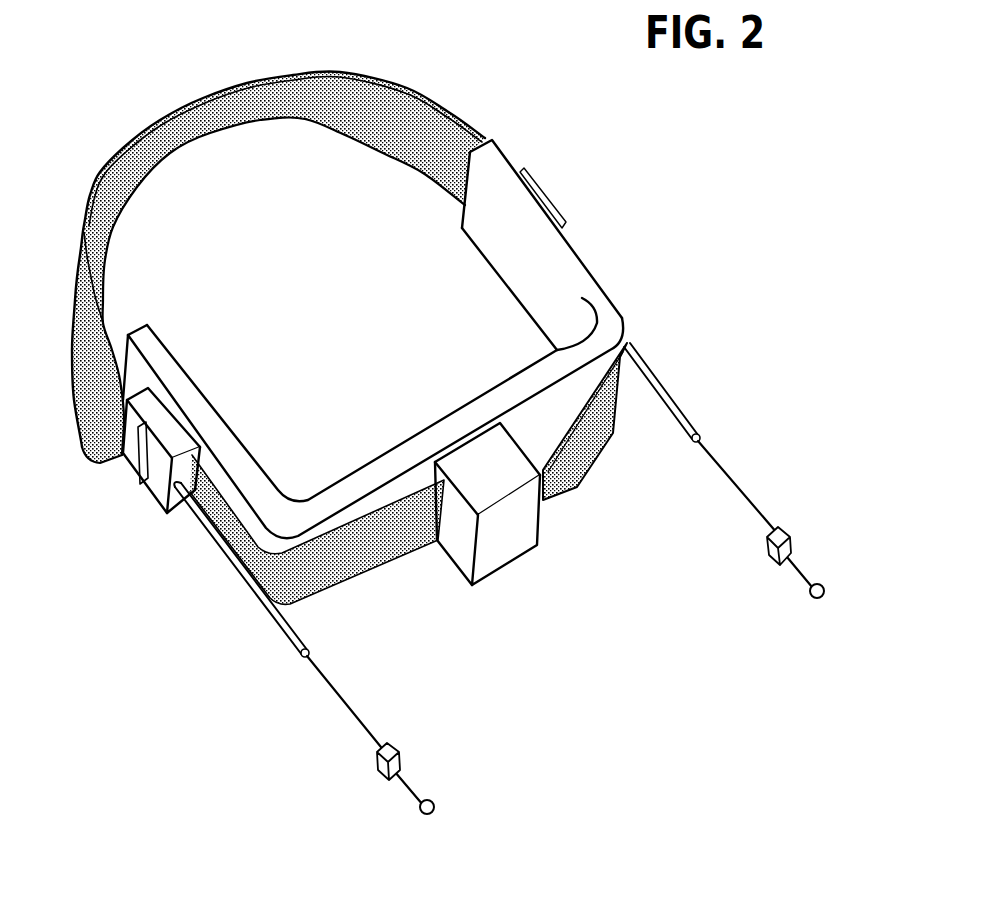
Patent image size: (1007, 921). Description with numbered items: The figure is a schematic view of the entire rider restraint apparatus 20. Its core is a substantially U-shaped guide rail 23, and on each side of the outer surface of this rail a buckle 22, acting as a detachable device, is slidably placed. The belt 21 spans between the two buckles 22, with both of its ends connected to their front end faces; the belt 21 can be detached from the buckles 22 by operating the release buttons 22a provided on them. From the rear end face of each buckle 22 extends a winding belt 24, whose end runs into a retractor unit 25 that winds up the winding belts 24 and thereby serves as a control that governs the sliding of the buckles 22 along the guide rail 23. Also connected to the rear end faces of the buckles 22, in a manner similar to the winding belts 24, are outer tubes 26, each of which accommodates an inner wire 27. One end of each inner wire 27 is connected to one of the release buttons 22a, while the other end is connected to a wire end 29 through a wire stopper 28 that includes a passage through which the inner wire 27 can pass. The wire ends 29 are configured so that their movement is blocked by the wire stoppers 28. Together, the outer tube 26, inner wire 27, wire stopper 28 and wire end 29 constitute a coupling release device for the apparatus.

The rider restraint apparatus 20 is at (432, 88).
The belt 21 is at (152, 138).
The buckle 22 is at (552, 199).
The release button 22a is at (122, 462).
The guide rail 23 is at (213, 398).
The winding belt 24 is at (574, 478).
The retractor unit 25 is at (508, 553).
The outer tube 26 is at (670, 397).
The inner wire 27 is at (732, 480).
The wire stopper 28 is at (788, 531).
The wire end 29 is at (812, 597).